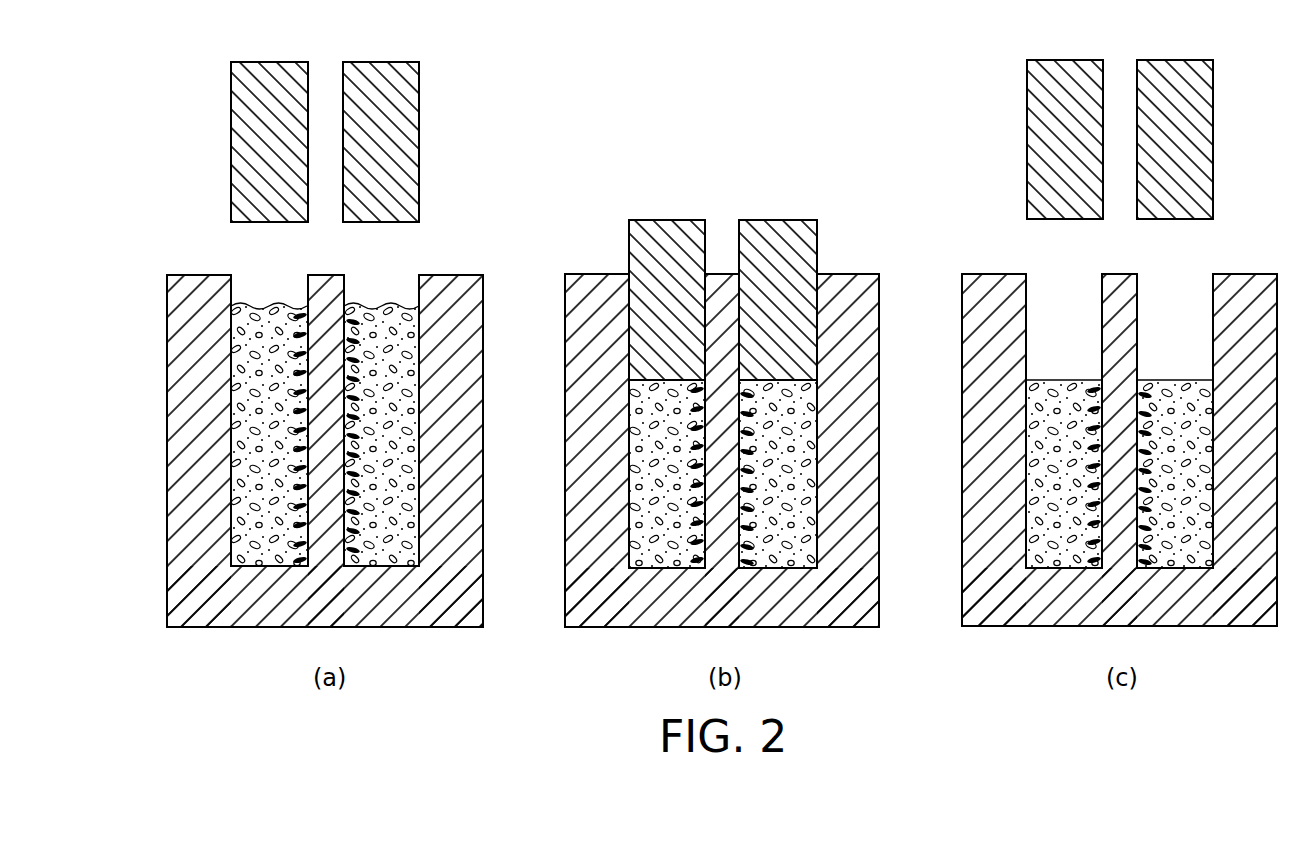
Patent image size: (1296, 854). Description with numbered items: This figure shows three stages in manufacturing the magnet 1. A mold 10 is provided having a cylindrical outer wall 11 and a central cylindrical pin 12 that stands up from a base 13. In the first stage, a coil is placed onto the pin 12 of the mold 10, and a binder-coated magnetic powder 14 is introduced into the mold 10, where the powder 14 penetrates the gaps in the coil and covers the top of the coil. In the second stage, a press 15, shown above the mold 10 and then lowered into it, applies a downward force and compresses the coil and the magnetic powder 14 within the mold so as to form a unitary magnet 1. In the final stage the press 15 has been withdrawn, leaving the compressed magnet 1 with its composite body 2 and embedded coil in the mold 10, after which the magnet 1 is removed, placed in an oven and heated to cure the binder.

The magnet 1 is at (1050, 370).
The composite body 2 is at (1185, 385).
The mold 10 is at (289, 452).
The cylindrical outer wall 11 is at (181, 489).
The central cylindrical pin 12 is at (325, 275).
The base 13 is at (276, 618).
The binder-coated magnetic powder 14 is at (390, 312).
The press 15 is at (420, 116).